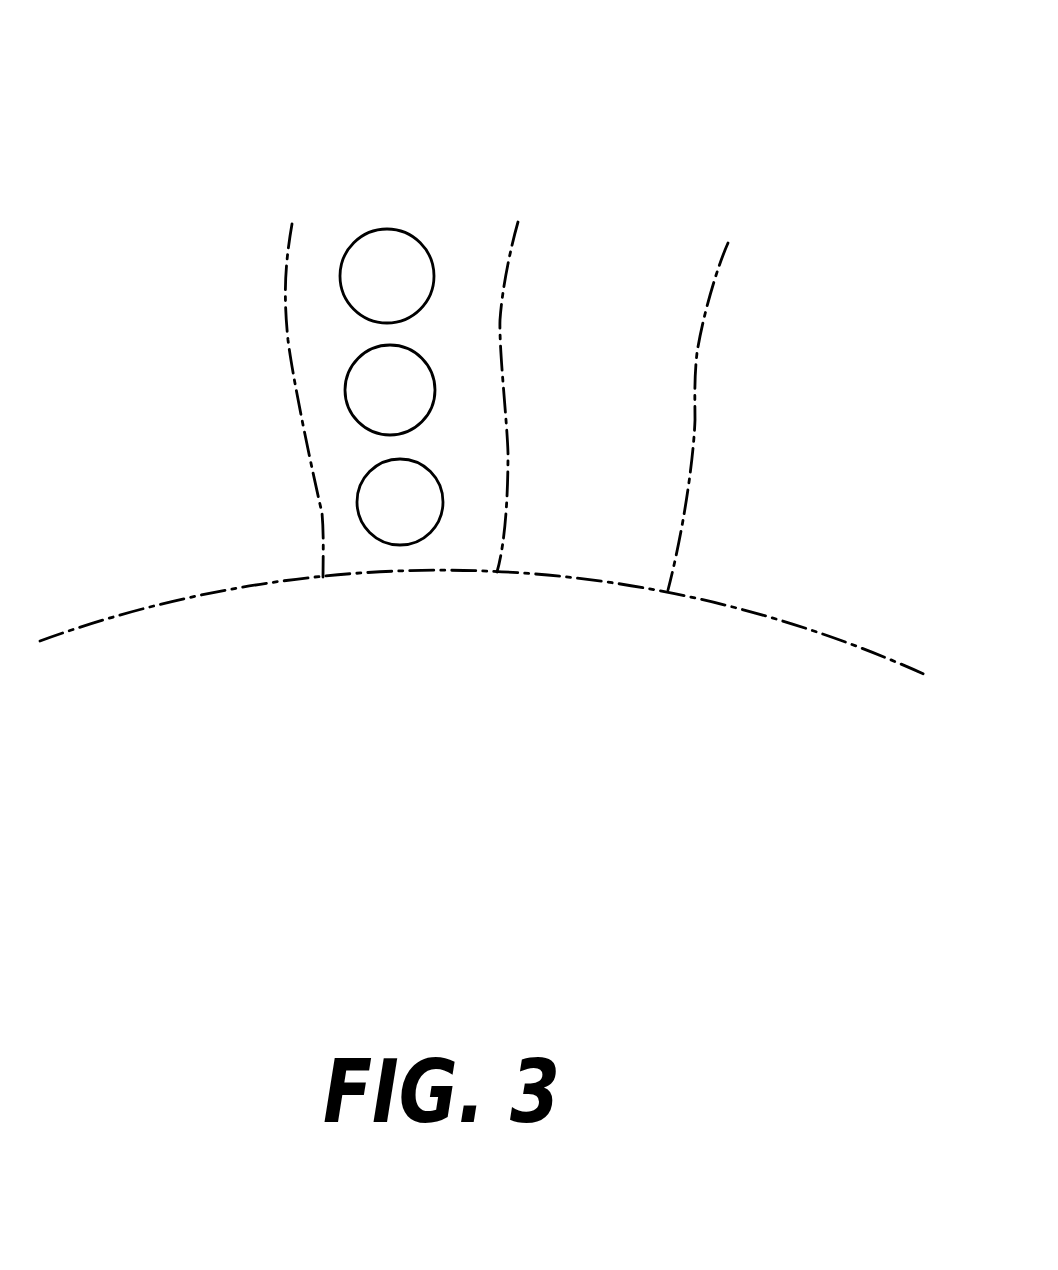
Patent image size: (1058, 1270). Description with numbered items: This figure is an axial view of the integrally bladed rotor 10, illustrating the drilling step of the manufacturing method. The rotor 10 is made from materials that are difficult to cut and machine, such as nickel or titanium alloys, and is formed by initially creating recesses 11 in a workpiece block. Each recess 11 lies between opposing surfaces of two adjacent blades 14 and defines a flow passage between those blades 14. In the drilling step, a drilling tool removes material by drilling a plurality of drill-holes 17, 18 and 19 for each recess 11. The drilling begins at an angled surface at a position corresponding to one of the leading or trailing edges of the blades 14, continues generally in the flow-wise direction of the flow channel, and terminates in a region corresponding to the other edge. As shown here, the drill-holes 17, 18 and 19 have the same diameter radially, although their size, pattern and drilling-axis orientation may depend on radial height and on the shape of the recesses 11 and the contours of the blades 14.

The integrally bladed rotor 10 is at (289, 712).
The recess 11 is at (380, 168).
The blade 14 is at (287, 245).
The drill-hole 17 is at (398, 502).
The drill-hole 18 is at (388, 392).
The drill-hole 19 is at (387, 278).